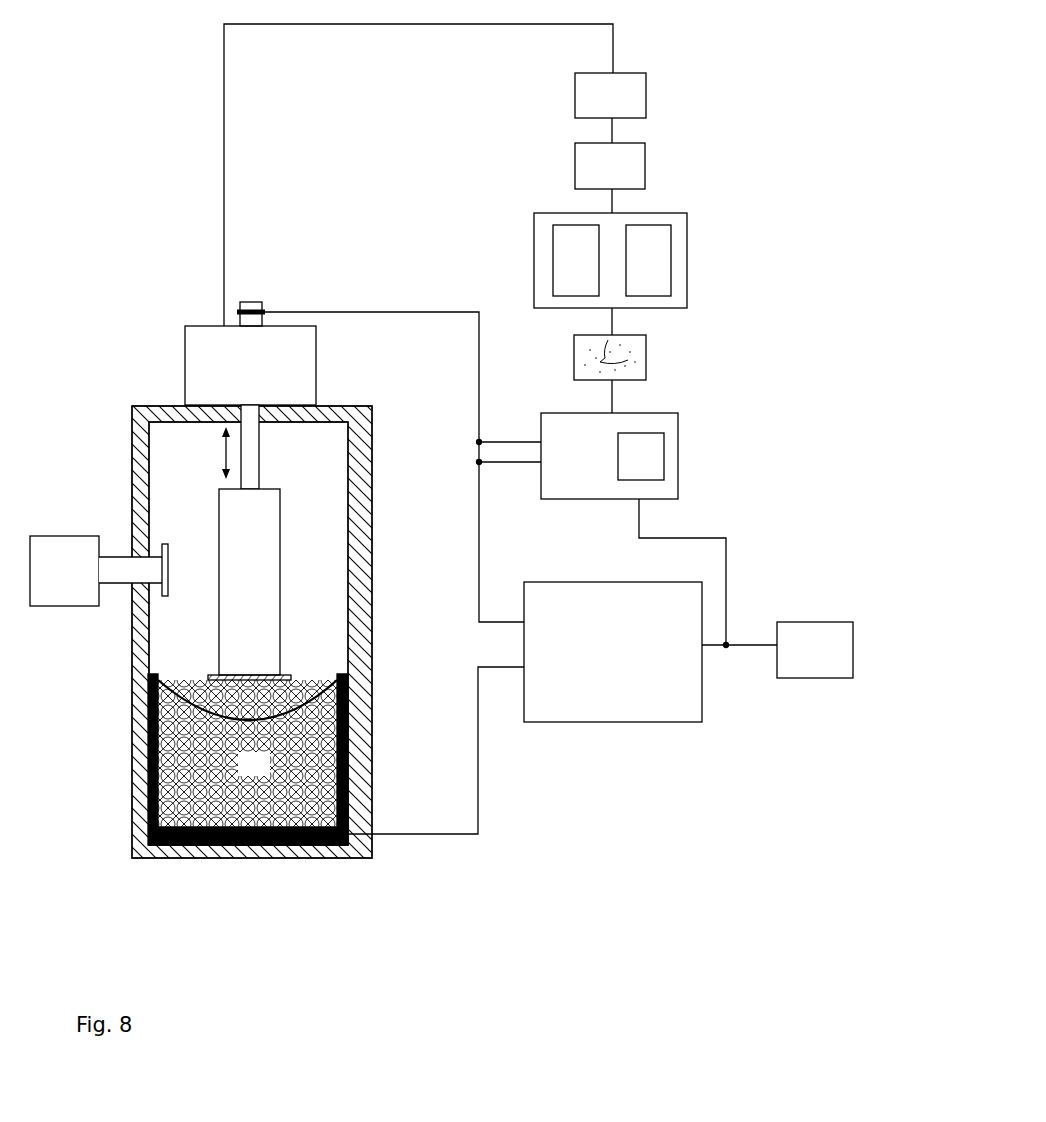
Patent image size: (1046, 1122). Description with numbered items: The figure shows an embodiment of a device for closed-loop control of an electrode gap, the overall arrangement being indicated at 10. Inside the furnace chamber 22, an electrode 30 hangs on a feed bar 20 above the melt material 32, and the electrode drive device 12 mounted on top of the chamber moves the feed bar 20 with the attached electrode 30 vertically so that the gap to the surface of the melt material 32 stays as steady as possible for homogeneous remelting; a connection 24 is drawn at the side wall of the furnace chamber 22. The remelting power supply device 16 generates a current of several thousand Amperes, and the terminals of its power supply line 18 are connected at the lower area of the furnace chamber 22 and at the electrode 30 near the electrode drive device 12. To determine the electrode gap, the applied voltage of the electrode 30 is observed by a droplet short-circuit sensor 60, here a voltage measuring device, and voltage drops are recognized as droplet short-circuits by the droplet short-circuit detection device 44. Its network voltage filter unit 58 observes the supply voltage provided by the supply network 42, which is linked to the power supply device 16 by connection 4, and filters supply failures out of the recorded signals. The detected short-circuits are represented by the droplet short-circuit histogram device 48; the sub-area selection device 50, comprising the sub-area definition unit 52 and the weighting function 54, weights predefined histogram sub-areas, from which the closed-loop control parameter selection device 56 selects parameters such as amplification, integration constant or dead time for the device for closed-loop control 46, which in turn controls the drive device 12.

The melting apparatus / furnace chamber 10 is at (150, 358).
The electrode drive device 12 is at (263, 377).
The feed bar 20 is at (259, 455).
The electrode 30 is at (264, 624).
The furnace chamber 22 is at (133, 690).
The melt material 32 is at (265, 775).
The gas supply 24 is at (76, 581).
The power supply line 18 is at (480, 352).
The remelting power supply device 16 is at (624, 656).
The supply network 42 is at (827, 656).
The device for closed-loop control 46 is at (623, 108).
The closed-loop control parameter selection device 56 is at (623, 178).
The sub-area selection device 50 is at (687, 252).
The sub-area definition unit 52 is at (588, 272).
The weighting function 54 is at (660, 272).
The droplet short-circuit histogram device 48 is at (646, 362).
The droplet short-circuit detection device 44 is at (599, 470).
The network voltage filter unit 58 is at (653, 470).
The droplet short-circuit sensor 60 is at (476, 455).
The data connection 4 is at (745, 636).